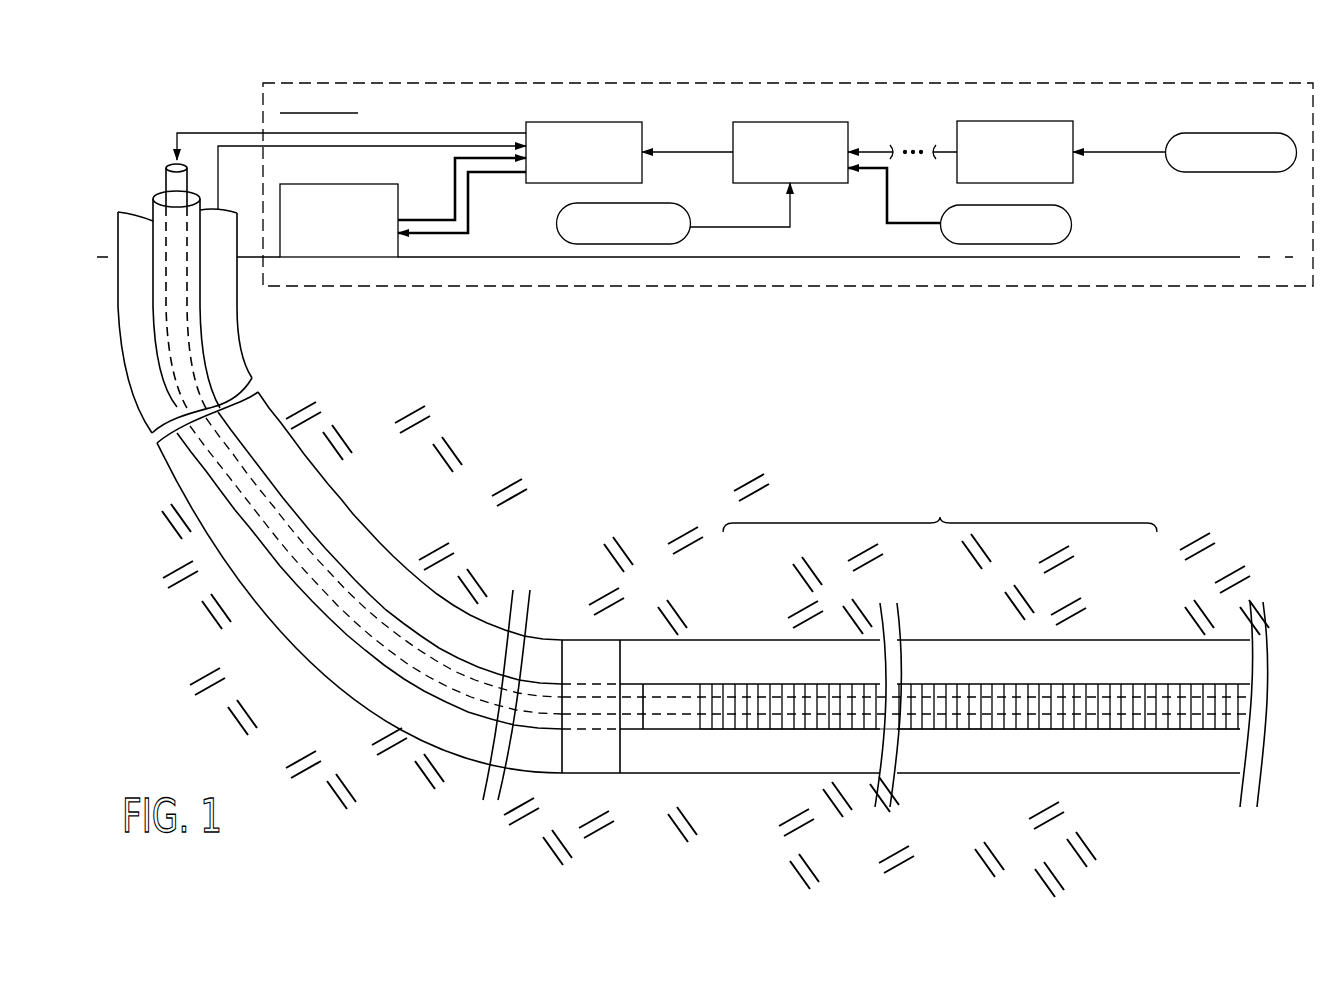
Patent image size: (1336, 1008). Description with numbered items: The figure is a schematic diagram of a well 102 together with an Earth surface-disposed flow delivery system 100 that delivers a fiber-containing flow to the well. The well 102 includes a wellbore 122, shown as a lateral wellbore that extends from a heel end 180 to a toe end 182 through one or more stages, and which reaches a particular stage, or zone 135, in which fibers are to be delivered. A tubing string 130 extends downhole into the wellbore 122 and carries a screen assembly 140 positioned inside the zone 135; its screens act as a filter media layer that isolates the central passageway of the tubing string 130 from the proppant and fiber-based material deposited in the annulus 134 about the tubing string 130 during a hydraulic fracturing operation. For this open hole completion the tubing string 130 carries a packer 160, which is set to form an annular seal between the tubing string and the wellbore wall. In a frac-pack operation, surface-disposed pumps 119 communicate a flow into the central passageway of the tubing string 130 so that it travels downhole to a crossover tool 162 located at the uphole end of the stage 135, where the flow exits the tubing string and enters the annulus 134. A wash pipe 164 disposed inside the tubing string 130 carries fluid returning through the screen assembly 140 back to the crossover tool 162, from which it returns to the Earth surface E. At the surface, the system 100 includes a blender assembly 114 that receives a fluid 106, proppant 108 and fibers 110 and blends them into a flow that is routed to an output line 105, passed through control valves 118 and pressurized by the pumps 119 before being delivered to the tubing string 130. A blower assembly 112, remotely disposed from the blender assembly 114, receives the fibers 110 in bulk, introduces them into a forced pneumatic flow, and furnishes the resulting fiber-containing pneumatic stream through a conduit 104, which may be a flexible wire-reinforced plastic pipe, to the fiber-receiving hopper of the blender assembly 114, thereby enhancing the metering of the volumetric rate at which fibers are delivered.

The flow delivery system 100 is at (735, 80).
The well 102 is at (140, 205).
The conduit 104 is at (880, 150).
The output line 105 is at (692, 150).
The fluid 106 is at (650, 205).
The proppant 108 is at (1072, 230).
The fibers 110 is at (1193, 133).
The blower assembly 112 is at (1022, 121).
The blender assembly 114 is at (790, 122).
The control valves 118 is at (540, 122).
The surface-disposed pumps 119 is at (350, 184).
The wellbore 122 is at (290, 436).
The tubing string 130 is at (288, 490).
The annulus 134 is at (690, 678).
The zone 135 is at (940, 512).
The screen assembly 140 is at (716, 735).
The packer 160 is at (590, 656).
The crossover tool 162 is at (672, 731).
The wash pipe 164 is at (358, 597).
The heel end 180 is at (468, 792).
The toe end 182 is at (1213, 774).
The Earth surface E is at (472, 257).